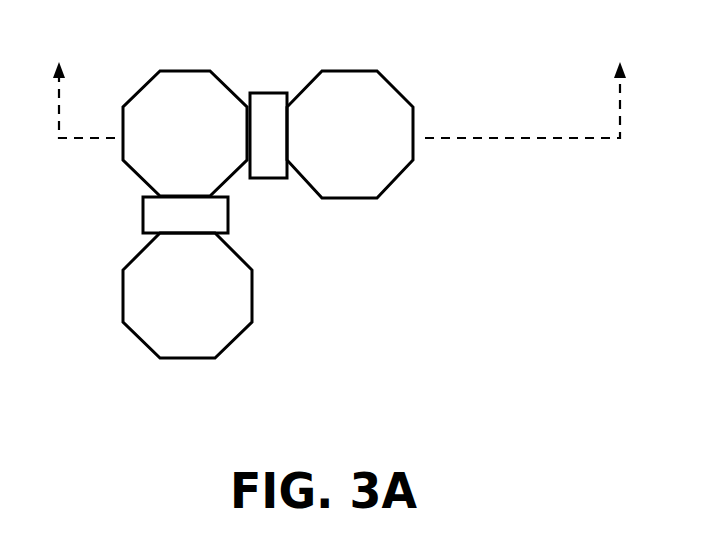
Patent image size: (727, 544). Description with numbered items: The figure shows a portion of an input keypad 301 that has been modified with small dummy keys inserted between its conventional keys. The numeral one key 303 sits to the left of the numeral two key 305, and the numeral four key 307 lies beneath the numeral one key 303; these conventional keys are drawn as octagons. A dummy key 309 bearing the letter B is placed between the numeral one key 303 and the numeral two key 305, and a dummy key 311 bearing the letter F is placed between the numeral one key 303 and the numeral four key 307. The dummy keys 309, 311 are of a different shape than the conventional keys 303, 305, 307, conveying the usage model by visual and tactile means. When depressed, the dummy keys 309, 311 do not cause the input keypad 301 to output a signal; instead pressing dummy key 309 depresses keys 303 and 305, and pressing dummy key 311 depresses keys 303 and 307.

The input keypad 301 is at (345, 234).
The numeral "1" key 303 is at (211, 70).
The numeral "2" key 305 is at (413, 107).
The numeral "4" key 307 is at (252, 310).
The dummy key 309 is at (278, 93).
The dummy key 311 is at (228, 208).